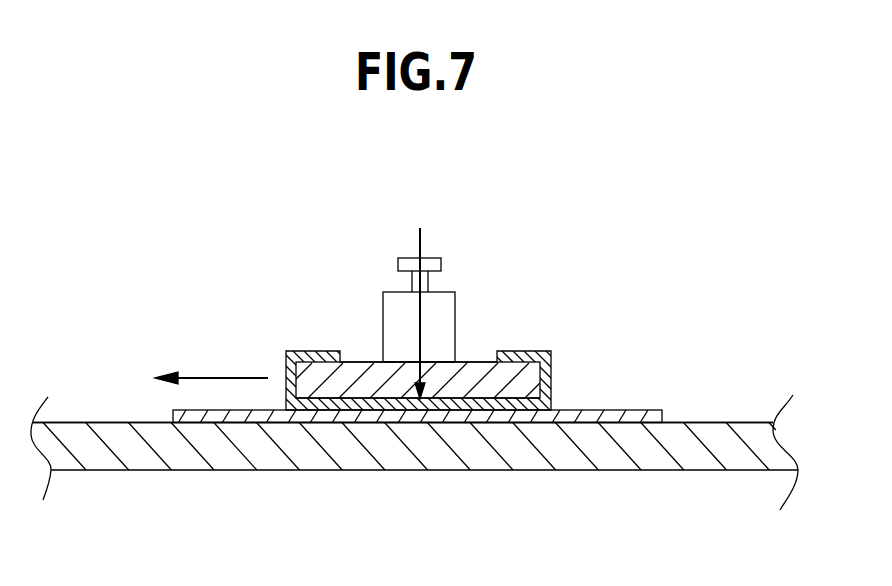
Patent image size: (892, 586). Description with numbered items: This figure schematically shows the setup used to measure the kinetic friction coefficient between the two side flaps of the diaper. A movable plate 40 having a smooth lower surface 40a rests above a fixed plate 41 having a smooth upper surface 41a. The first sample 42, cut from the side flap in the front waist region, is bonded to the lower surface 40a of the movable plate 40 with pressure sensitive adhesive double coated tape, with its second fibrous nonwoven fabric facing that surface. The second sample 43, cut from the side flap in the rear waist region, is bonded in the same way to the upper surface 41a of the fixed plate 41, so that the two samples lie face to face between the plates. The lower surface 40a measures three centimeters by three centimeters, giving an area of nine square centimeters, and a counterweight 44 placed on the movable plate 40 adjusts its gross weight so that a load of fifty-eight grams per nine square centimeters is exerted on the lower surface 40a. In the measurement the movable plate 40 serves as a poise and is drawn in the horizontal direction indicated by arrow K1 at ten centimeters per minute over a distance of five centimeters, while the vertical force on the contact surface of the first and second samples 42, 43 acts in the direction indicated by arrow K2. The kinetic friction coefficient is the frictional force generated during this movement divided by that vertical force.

The movable plate 40 is at (476, 361).
The lower surface of the movable plate 40a is at (502, 399).
The fixed plate 41 is at (570, 452).
The upper surface of the fixed plate 41a is at (715, 428).
The first sample 42 is at (292, 351).
The second sample 43 is at (632, 409).
The counterweight 44 is at (384, 291).
The arrow K1 is at (208, 375).
The arrow K2 is at (421, 243).